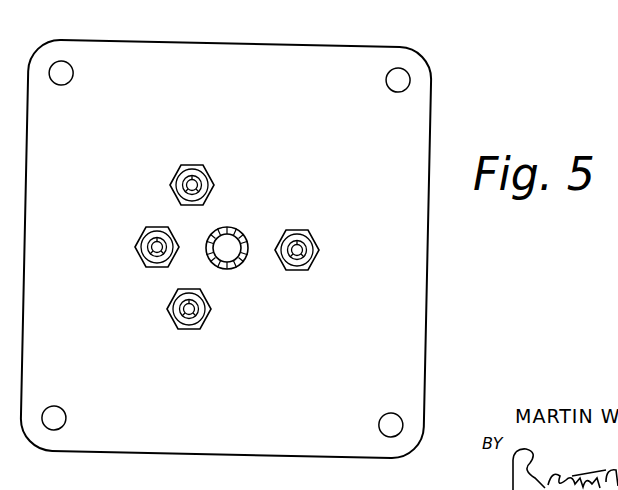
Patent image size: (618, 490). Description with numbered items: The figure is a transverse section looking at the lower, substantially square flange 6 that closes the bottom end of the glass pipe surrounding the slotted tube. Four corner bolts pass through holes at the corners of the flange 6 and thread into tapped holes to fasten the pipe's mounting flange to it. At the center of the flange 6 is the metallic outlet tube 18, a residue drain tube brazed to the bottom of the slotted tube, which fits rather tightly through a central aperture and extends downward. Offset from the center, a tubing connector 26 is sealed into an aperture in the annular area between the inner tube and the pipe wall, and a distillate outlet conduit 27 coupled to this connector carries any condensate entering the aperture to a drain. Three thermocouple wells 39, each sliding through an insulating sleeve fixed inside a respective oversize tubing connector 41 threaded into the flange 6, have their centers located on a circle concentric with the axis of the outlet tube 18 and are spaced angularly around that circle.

The flange 6 is at (348, 48).
The outlet tube 18 is at (240, 235).
The tubing connector 26 is at (318, 249).
The distillate outlet conduit 27 is at (301, 257).
The thermocouple well 39 is at (200, 181).
The tubing connector 41 is at (176, 175).